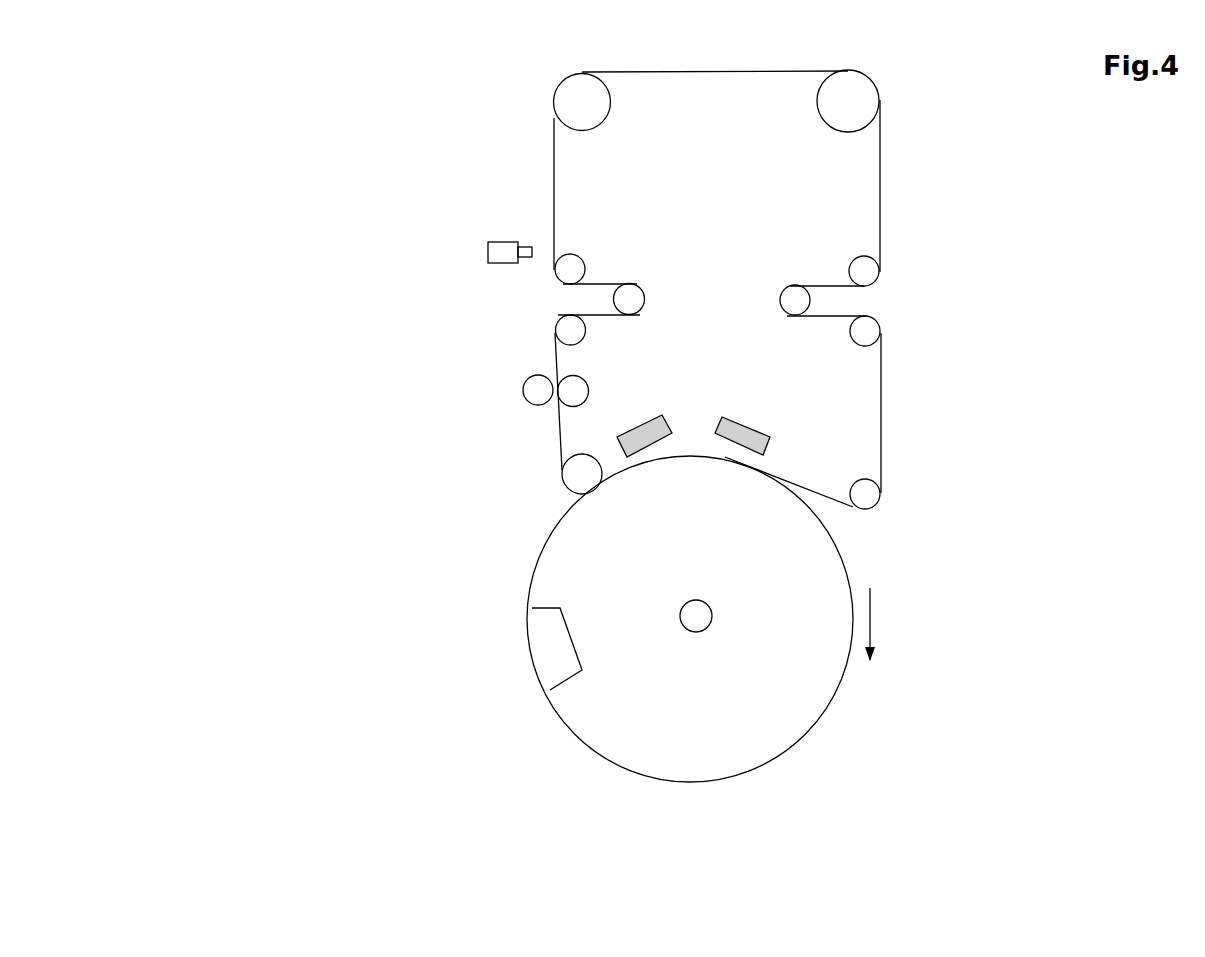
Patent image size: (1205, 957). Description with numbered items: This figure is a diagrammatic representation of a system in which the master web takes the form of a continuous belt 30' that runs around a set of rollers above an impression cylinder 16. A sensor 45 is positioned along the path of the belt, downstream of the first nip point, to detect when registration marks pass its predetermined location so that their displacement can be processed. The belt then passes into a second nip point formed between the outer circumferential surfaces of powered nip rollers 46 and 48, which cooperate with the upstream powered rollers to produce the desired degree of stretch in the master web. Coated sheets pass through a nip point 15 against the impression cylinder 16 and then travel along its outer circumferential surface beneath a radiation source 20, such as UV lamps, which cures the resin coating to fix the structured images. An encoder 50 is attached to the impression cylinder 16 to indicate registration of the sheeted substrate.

The continuous belt 30' is at (630, 285).
The sensor 45 is at (487, 252).
The nip roller 46 is at (520, 385).
The nip roller 48 is at (595, 383).
The radiation source 20 is at (740, 423).
The nip point 15 is at (570, 497).
The impression cylinder 16 is at (832, 712).
The encoder 50 is at (685, 640).